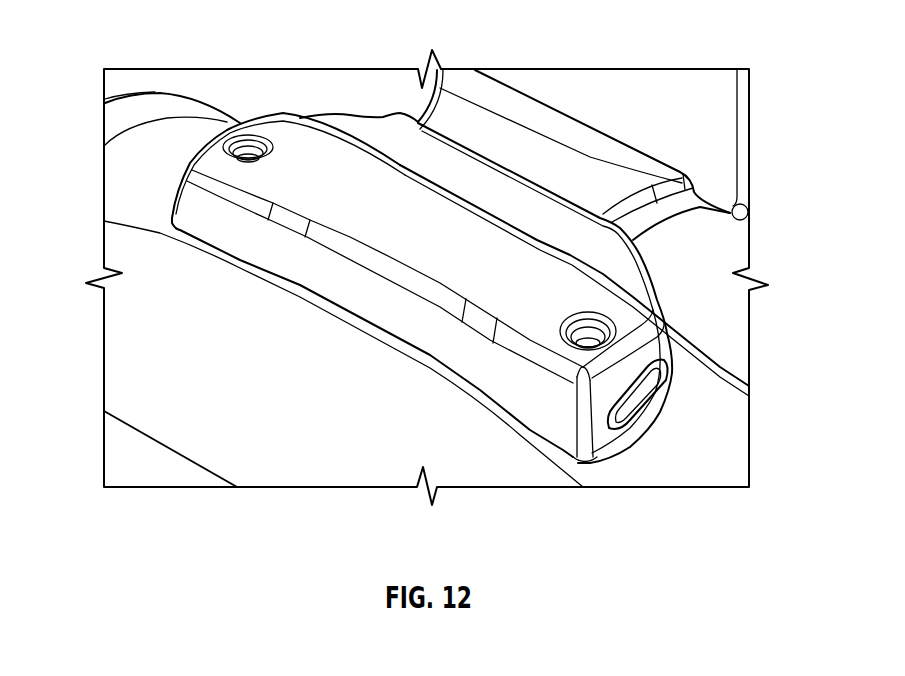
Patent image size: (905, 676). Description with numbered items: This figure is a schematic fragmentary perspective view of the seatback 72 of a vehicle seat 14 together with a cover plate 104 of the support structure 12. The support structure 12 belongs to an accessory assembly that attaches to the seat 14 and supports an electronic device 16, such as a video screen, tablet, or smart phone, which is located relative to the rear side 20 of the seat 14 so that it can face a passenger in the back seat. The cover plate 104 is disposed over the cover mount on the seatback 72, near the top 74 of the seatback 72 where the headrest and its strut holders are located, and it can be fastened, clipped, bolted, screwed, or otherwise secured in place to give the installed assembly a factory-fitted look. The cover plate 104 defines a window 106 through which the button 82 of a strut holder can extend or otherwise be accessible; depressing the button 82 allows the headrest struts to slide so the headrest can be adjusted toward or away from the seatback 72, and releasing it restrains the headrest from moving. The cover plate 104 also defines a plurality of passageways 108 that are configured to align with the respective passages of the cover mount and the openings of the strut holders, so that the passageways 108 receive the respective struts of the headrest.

The support structure 12 is at (724, 258).
The seat 14 is at (90, 198).
The electronic device 16 is at (735, 144).
The rear side 20 is at (737, 367).
The seatback 72 is at (225, 457).
The top 74 is at (165, 140).
The button 82 is at (648, 410).
The cover plate 104 is at (440, 309).
The window 106 is at (610, 442).
The passageways 108 is at (248, 137).